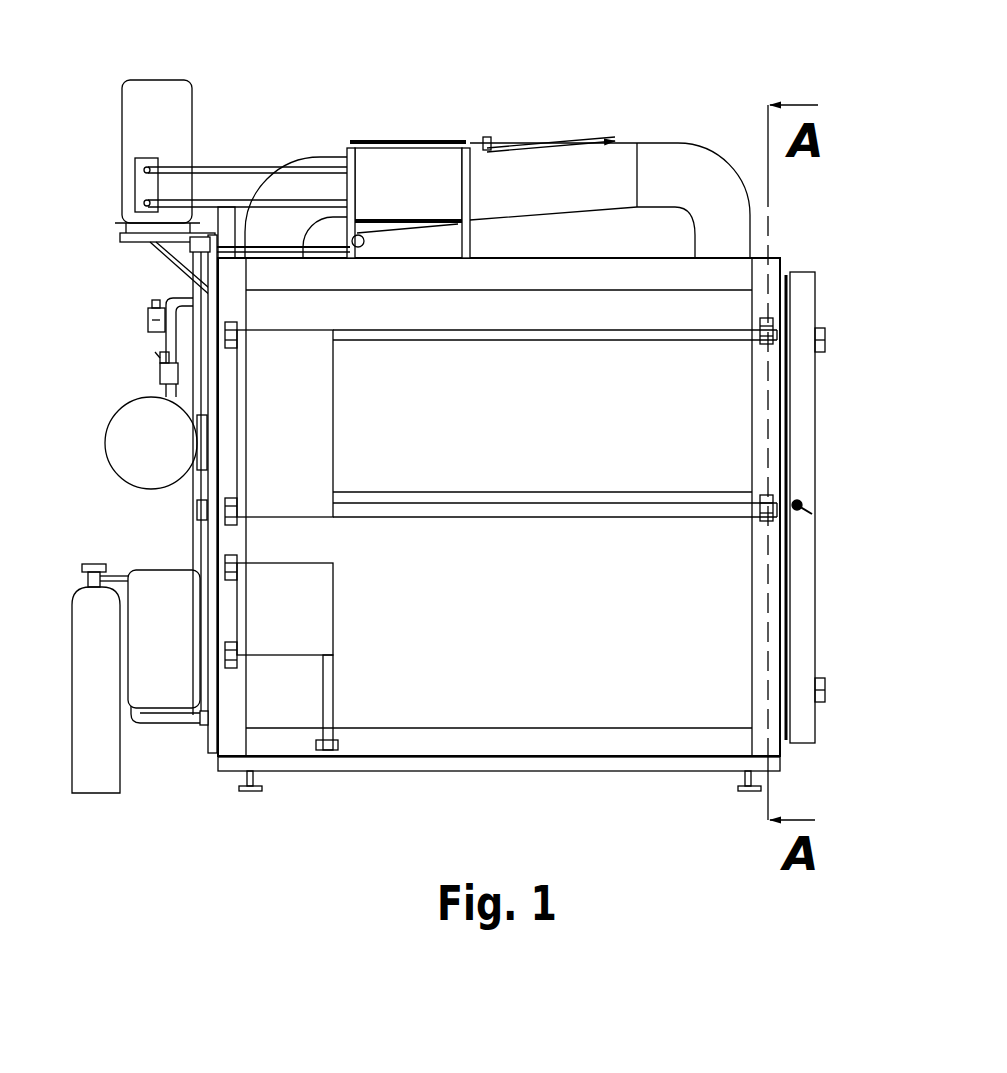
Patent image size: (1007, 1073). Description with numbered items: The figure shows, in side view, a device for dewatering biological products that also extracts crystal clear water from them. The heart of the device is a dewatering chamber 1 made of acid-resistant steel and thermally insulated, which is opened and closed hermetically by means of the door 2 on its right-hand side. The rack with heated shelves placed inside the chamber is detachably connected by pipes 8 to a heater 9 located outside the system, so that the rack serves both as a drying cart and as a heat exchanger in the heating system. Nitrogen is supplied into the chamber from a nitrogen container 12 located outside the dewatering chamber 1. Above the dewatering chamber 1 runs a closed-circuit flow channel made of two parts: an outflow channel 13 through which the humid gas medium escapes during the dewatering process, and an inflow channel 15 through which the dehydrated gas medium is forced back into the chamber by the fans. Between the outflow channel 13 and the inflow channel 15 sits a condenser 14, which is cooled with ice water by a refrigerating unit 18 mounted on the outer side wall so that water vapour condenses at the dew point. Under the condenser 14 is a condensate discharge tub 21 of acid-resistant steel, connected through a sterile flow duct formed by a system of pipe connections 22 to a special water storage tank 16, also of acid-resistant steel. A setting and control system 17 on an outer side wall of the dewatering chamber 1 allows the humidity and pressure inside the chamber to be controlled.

The dewatering chamber 1 is at (705, 312).
The door 2 is at (803, 297).
The pipes 8 is at (163, 342).
The heater 9 is at (135, 425).
The nitrogen container 12 is at (85, 600).
The outflow channel 13 is at (675, 167).
The condenser 14 is at (410, 167).
The inflow channel 15 is at (318, 152).
The water storage tank 16 is at (155, 585).
The setting and control system 17 is at (270, 367).
The refrigerating unit 18 is at (140, 102).
The condensate discharge tub 21 is at (375, 222).
The pipe connections 22 is at (185, 381).